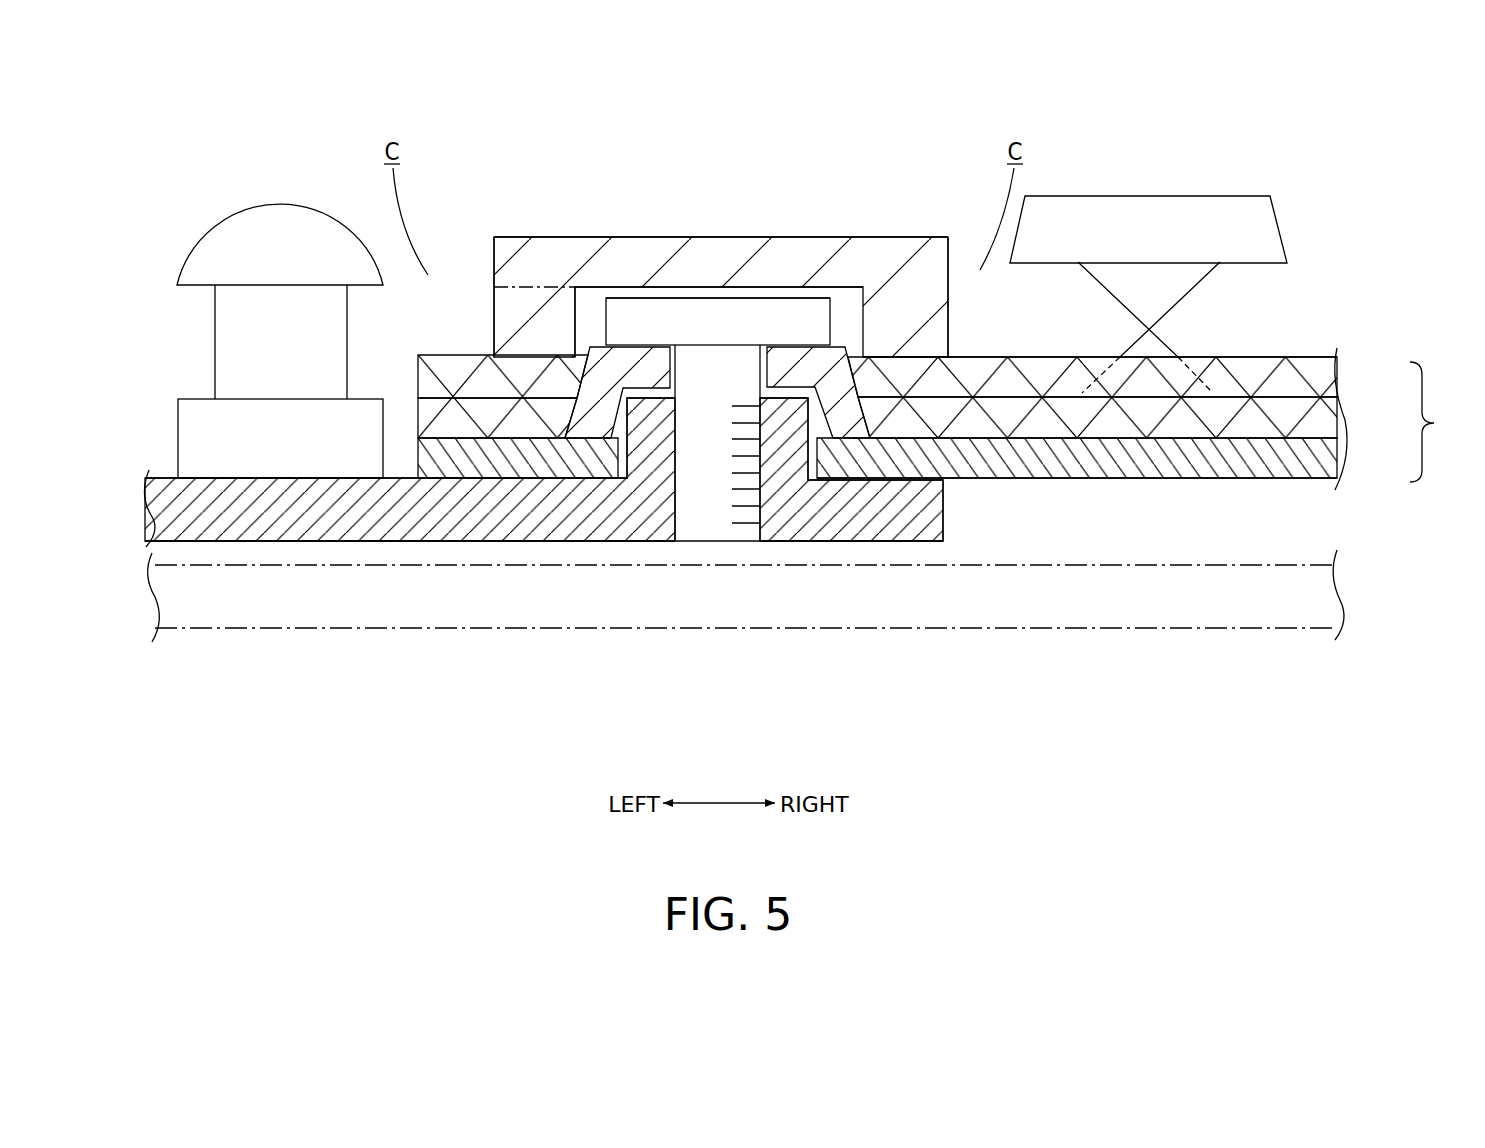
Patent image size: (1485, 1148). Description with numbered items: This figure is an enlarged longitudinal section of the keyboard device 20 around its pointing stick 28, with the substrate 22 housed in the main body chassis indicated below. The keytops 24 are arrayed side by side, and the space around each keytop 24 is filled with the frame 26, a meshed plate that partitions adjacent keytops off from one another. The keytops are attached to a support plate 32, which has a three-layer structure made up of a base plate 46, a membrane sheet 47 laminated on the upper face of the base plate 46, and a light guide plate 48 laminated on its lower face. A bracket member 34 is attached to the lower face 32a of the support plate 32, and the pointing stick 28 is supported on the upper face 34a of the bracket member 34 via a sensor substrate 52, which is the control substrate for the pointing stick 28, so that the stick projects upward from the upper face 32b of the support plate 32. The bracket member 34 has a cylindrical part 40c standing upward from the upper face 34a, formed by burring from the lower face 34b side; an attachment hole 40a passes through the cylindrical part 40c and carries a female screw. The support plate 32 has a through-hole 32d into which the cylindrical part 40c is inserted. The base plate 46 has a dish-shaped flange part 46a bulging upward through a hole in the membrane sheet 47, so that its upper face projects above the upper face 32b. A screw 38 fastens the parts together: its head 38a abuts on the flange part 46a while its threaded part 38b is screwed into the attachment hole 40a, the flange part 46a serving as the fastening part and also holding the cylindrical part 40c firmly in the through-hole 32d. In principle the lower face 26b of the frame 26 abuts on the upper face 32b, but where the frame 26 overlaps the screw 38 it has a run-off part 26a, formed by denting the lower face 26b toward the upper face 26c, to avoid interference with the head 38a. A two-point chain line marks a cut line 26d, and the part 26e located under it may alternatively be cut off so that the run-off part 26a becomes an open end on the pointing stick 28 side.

The keyboard device 20 is at (216, 95).
The substrate 22 is at (1107, 632).
The keytop 24 is at (1158, 220).
The frame 26 is at (878, 230).
The run-off part 26a is at (802, 290).
The lower face 26b is at (918, 360).
The upper face 26c is at (530, 237).
The cut line 26d is at (494, 292).
The part located under the cut line 26e is at (550, 328).
The pointing stick 28 is at (277, 219).
The support plate 32 is at (1402, 419).
The lower face 32a is at (1200, 480).
The upper face 32b is at (1268, 357).
The through-hole 32d is at (677, 362).
The bracket member 34 is at (352, 544).
The upper face 34a is at (225, 477).
The lower face 34b is at (288, 545).
The screw 38 is at (755, 301).
The head 38a is at (648, 320).
The threaded part 38b is at (710, 500).
The attachment hole 40a is at (677, 510).
The cylindrical part 40c is at (808, 418).
The base plate 46 is at (1310, 418).
The flange part 46a is at (614, 366).
The membrane sheet 47 is at (1310, 380).
The light guide plate 48 is at (1310, 462).
The sensor substrate 52 is at (200, 435).